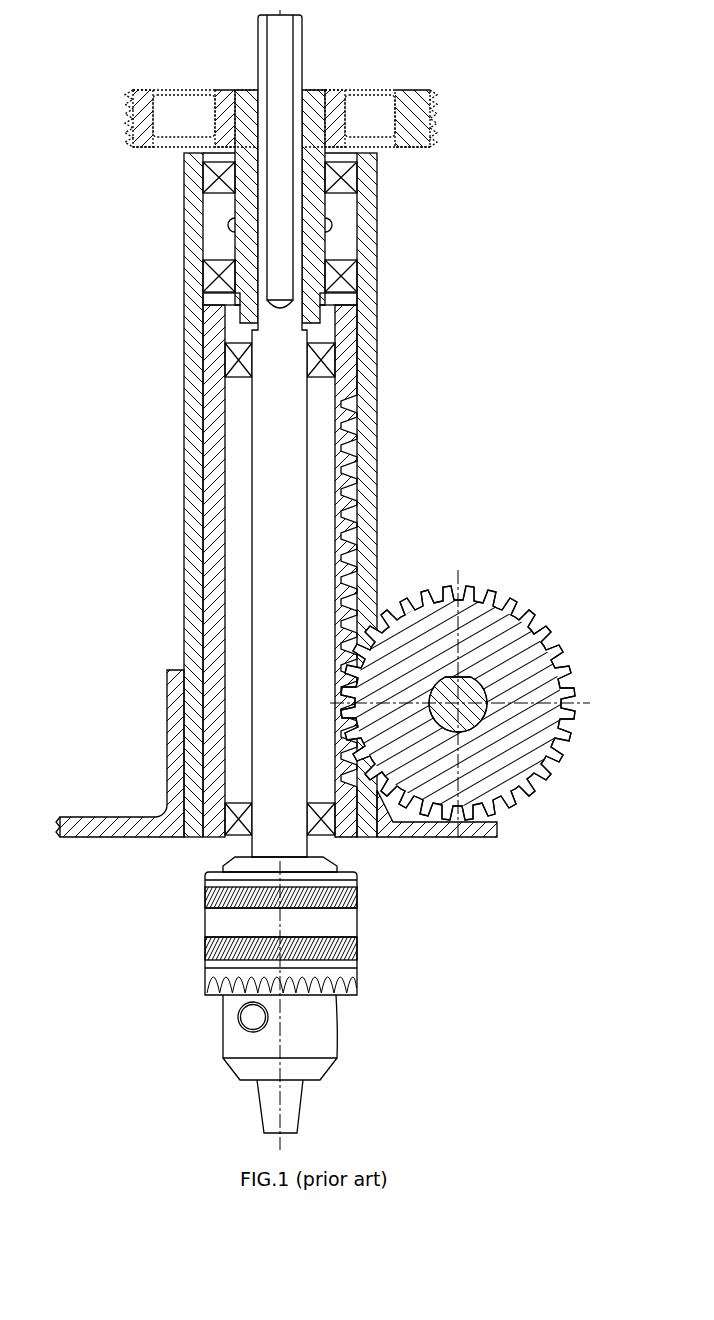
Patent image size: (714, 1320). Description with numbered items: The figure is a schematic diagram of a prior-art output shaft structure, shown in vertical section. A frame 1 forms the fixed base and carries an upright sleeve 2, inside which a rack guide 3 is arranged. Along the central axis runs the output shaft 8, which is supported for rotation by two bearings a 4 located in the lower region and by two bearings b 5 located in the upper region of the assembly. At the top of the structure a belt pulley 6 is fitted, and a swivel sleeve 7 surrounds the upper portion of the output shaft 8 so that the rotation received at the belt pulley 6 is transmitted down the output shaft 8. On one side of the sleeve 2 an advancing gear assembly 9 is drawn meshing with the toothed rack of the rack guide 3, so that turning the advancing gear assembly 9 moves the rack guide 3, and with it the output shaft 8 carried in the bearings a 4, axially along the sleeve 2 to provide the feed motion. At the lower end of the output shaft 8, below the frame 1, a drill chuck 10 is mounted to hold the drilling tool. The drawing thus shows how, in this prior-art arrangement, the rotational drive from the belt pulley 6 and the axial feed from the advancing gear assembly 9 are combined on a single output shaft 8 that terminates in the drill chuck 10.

The frame 1 is at (178, 773).
The sleeve 2 is at (198, 627).
The rack guide 3 is at (213, 470).
The bearing a 4 is at (223, 360).
The bearing b 5 is at (205, 268).
The belt pulley 6 is at (223, 115).
The swivel sleeve 7 is at (313, 257).
The output shaft 8 is at (293, 480).
The advancing gear assembly 9 is at (397, 643).
The drill chuck 10 is at (337, 977).